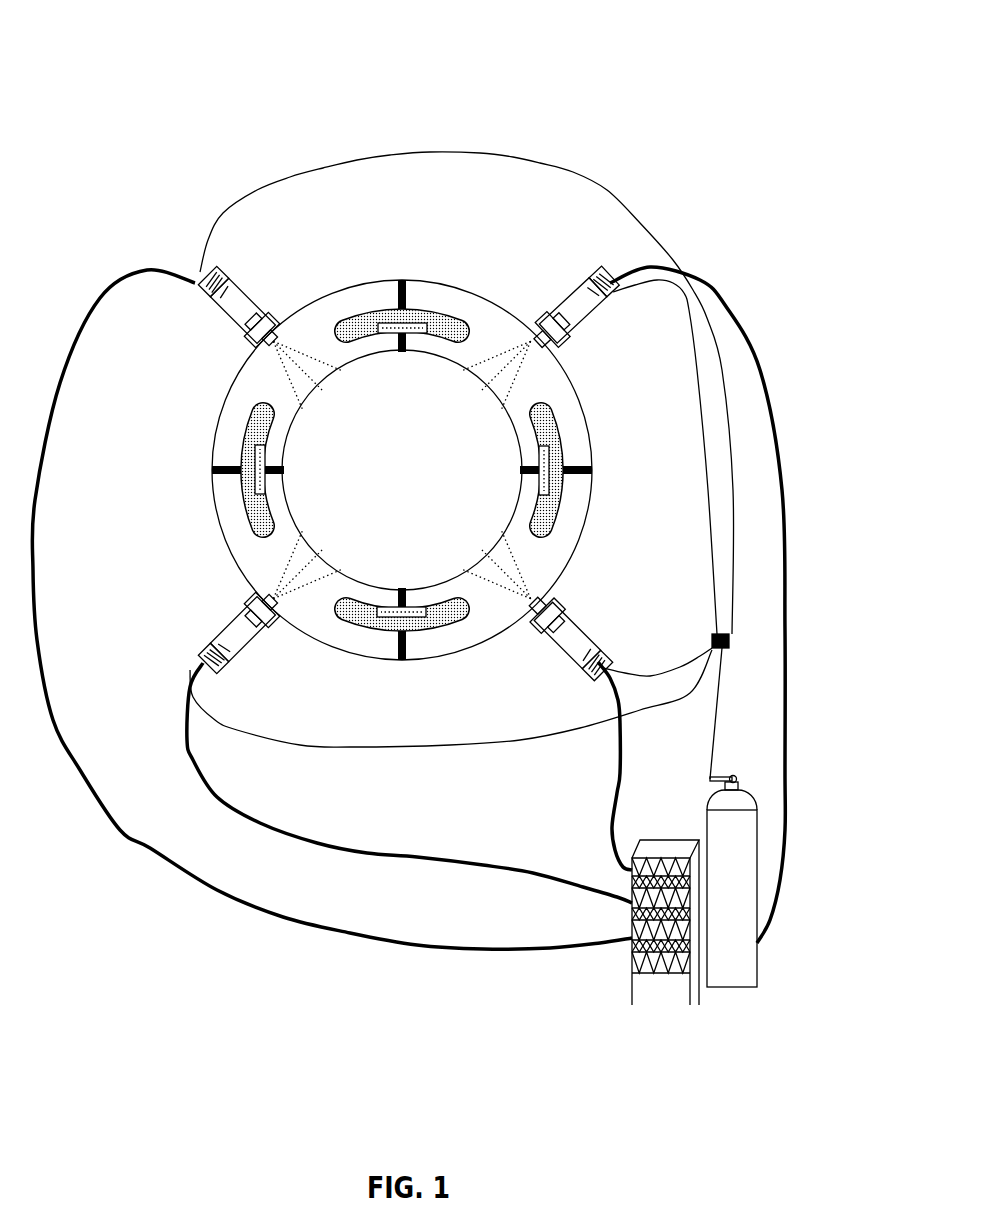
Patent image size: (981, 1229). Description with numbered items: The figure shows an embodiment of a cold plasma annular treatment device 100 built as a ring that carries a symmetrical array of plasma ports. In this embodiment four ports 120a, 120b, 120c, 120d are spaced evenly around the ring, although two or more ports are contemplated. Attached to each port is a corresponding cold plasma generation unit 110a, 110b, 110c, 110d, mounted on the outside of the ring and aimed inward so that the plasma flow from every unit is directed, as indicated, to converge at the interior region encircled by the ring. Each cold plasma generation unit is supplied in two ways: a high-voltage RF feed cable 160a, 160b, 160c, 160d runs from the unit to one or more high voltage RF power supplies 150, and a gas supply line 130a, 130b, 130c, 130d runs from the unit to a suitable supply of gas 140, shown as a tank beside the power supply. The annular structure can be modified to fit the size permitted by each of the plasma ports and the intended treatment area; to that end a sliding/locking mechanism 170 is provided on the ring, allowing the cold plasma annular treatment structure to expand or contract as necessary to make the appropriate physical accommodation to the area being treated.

The cold plasma annular treatment device 100 is at (778, 41).
The cold plasma generation unit 110a is at (208, 324).
The cold plasma generation unit 110b is at (546, 311).
The cold plasma generation unit 110c is at (591, 623).
The cold plasma generation unit 110d is at (222, 610).
The plasma port 120a is at (290, 360).
The plasma port 120b is at (500, 377).
The plasma port 120c is at (490, 554).
The plasma port 120d is at (313, 554).
The gas supply line 130a is at (563, 172).
The gas supply line 130b is at (665, 457).
The gas supply line 130c is at (650, 675).
The gas supply line 130d is at (278, 740).
The supply of gas 140 is at (746, 963).
The high voltage RF power supply 150 is at (620, 917).
The high-voltage RF feed cable 160a is at (165, 858).
The high-voltage RF feed cable 160b is at (705, 283).
The high-voltage RF feed cable 160c is at (617, 803).
The high-voltage RF feed cable 160d is at (367, 851).
The sliding/locking mechanism 170 is at (437, 630).